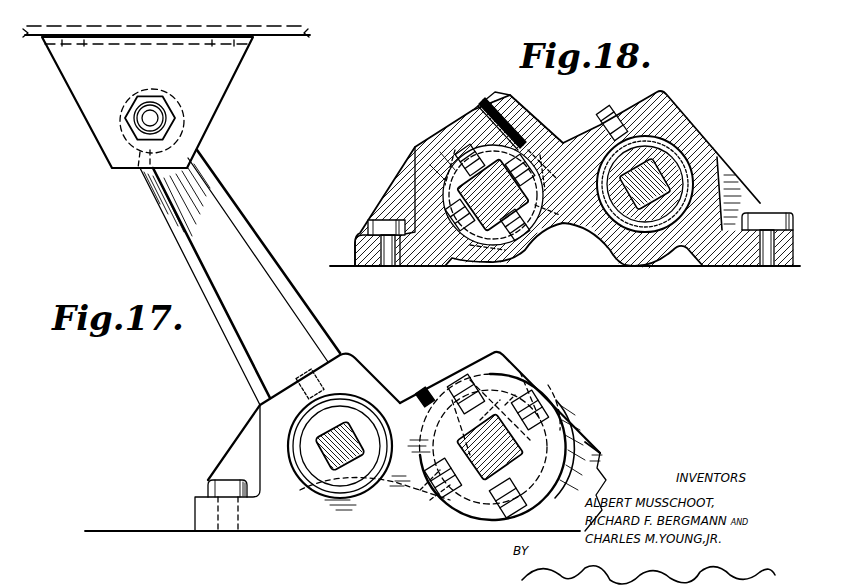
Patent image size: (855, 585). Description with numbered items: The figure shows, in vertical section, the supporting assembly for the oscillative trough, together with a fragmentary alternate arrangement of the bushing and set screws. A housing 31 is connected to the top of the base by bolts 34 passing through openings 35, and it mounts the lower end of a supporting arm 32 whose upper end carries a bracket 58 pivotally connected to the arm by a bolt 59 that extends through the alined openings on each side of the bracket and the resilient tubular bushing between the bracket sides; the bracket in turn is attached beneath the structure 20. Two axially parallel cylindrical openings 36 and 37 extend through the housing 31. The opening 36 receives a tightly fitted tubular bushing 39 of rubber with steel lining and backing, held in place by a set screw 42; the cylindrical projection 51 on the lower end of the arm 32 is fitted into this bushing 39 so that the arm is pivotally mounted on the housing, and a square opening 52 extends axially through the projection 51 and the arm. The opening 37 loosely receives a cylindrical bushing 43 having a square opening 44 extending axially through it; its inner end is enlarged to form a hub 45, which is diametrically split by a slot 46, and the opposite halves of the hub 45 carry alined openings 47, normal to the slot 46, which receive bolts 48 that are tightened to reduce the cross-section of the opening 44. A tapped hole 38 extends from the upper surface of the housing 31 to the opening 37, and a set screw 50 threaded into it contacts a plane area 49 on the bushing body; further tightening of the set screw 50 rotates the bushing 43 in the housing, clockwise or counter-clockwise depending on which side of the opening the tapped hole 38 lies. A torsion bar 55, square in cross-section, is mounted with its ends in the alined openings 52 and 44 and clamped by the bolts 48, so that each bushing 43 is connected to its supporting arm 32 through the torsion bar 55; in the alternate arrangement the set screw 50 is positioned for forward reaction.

In FIG. 17, the supporting beam 20 is at (183, 18).
In FIG. 17, the housing 31 is at (586, 443).
In FIG. 18, the housing 31 is at (745, 190).
In FIG. 17, the supporting arm 32 is at (267, 250).
In FIG. 17, the bolt 34 is at (215, 484).
In FIG. 18, the bolt 34 is at (370, 225).
In FIG. 17, the opening 35 is at (224, 530).
In FIG. 18, the opening 35 is at (386, 262).
In FIG. 17, the cylindrical opening 36 is at (312, 480).
In FIG. 18, the cylindrical opening 36 is at (683, 128).
In FIG. 17, the cylindrical opening 37 is at (512, 378).
In FIG. 18, the cylindrical opening 37 is at (548, 131).
In FIG. 17, the tapped hole 38 is at (416, 437).
In FIG. 18, the tapped hole 38 is at (520, 115).
In FIG. 17, the tubular bushing 39 is at (305, 456).
In FIG. 18, the tubular bushing 39 is at (703, 143).
In FIG. 17, the set screw 42 is at (305, 377).
In FIG. 18, the set screw 42 is at (615, 107).
In FIG. 17, the cylindrical bushing 43 is at (503, 368).
In FIG. 18, the cylindrical bushing 43 is at (450, 178).
In FIG. 17, the square opening 44 is at (494, 471).
In FIG. 18, the square opening 44 is at (478, 262).
In FIG. 17, the hub 45 is at (556, 432).
In FIG. 17, the slot 46 is at (420, 448).
In FIG. 17, the opening 47 is at (425, 491).
In FIG. 18, the opening 47 is at (536, 121).
In FIG. 17, the bolt 48 is at (460, 382).
In FIG. 18, the bolt 48 is at (466, 120).
In FIG. 17, the plane area 49 is at (532, 384).
In FIG. 18, the plane area 49 is at (455, 160).
In FIG. 17, the set screw 50 is at (423, 392).
In FIG. 18, the set screw 50 is at (490, 100).
In FIG. 17, the cylindrical projection 51 is at (362, 410).
In FIG. 18, the cylindrical projection 51 is at (663, 118).
In FIG. 17, the square opening 52 is at (352, 470).
In FIG. 18, the square opening 52 is at (720, 160).
In FIG. 17, the torsion bar 55 is at (325, 437).
In FIG. 18, the torsion bar 55 is at (553, 228).
In FIG. 17, the bracket 58 is at (222, 103).
In FIG. 17, the bolt 59 is at (164, 112).